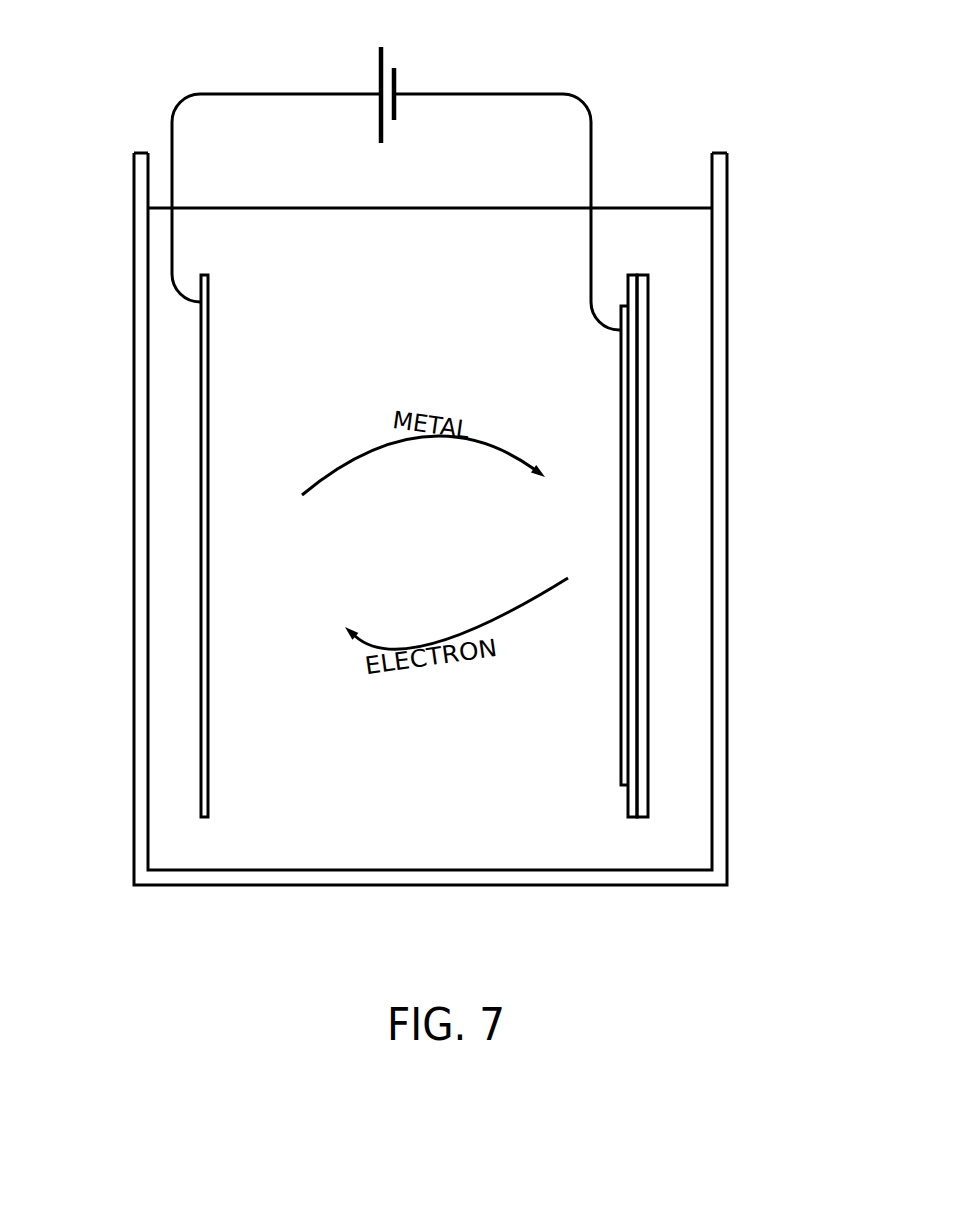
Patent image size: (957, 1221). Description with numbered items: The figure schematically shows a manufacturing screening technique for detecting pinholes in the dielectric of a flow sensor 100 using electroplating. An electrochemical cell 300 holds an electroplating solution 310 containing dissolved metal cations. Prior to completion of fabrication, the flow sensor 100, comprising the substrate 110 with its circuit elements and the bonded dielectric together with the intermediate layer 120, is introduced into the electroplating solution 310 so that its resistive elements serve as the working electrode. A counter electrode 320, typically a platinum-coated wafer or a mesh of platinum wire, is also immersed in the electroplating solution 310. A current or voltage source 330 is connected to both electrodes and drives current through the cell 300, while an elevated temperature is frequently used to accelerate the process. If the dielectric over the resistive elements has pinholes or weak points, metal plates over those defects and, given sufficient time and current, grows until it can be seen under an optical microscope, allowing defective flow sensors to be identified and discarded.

The flow sensor 100 is at (709, 546).
The substrate 110 is at (651, 430).
The intermediate layer 120 is at (640, 516).
The electrochemical cell 300 is at (117, 488).
The electroplating solution 310 is at (545, 257).
The counter electrode 320 is at (184, 372).
The current or voltage source 330 is at (418, 65).